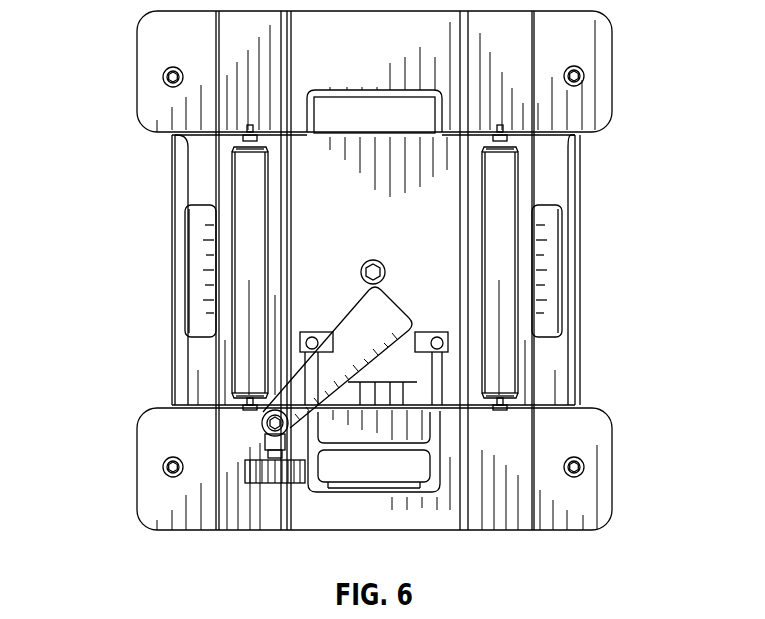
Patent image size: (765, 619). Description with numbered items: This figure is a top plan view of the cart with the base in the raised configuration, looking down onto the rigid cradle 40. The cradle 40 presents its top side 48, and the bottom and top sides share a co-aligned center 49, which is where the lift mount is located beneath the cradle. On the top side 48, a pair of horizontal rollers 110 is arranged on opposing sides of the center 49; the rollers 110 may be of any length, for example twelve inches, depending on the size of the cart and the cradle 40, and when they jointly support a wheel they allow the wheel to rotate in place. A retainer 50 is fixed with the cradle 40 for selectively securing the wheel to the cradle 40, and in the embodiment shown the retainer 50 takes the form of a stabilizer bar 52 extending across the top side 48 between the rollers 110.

The cradle 40 is at (126, 300).
The top side 48 is at (315, 252).
The center 49 is at (374, 260).
The retainer 50 is at (263, 418).
The stabilizer bar 52 is at (402, 311).
The horizontal rollers 110 is at (240, 190).